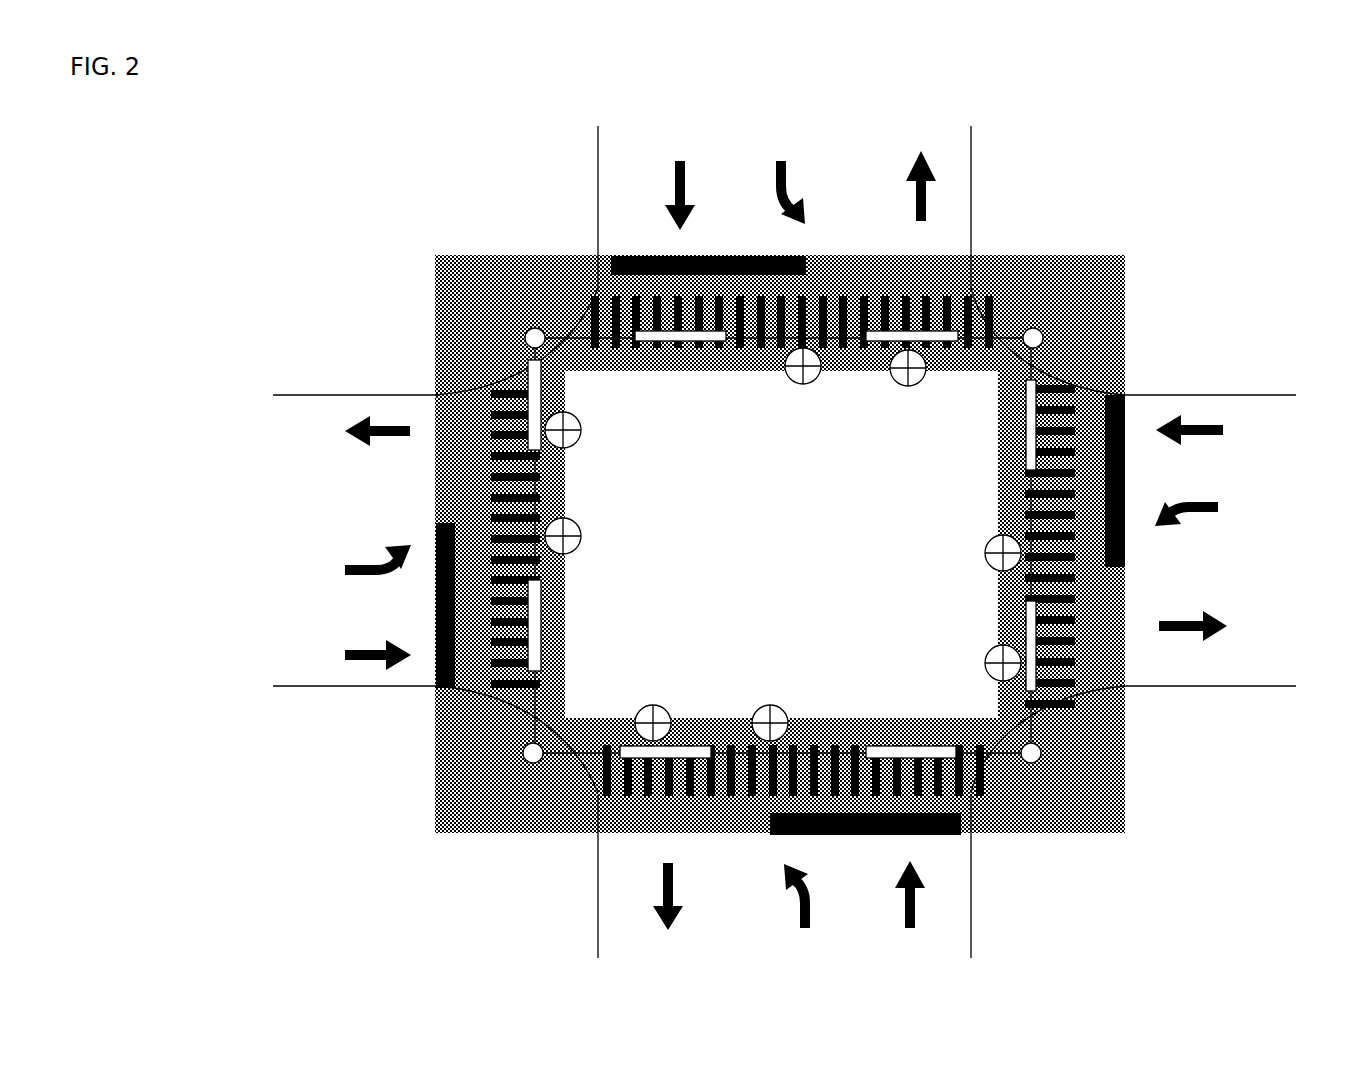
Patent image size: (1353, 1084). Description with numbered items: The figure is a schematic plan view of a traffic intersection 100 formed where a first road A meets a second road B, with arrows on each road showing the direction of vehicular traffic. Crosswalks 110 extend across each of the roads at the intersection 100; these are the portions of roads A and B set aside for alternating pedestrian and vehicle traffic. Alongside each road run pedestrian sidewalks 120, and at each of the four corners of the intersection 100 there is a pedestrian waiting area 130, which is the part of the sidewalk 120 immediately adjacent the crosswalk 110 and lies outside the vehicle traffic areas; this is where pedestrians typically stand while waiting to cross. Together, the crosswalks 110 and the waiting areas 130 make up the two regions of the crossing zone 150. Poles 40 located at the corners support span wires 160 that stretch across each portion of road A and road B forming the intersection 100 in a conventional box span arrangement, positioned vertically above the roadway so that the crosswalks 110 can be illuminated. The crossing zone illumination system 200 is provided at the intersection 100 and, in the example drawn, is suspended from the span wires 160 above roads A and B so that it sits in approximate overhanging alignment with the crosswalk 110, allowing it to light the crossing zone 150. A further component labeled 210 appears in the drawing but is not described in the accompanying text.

The intersection 100 is at (1340, 143).
The crosswalk 110 is at (483, 506).
The pedestrian sidewalk 120 is at (547, 160).
The pedestrian waiting area 130 is at (1025, 272).
The crossing zone 150 is at (1116, 692).
The span wire 160 is at (525, 717).
The crossing zone illumination system 200 is at (507, 354).
The pedestrian signal unit 210 is at (523, 417).
The pole 40 is at (518, 743).